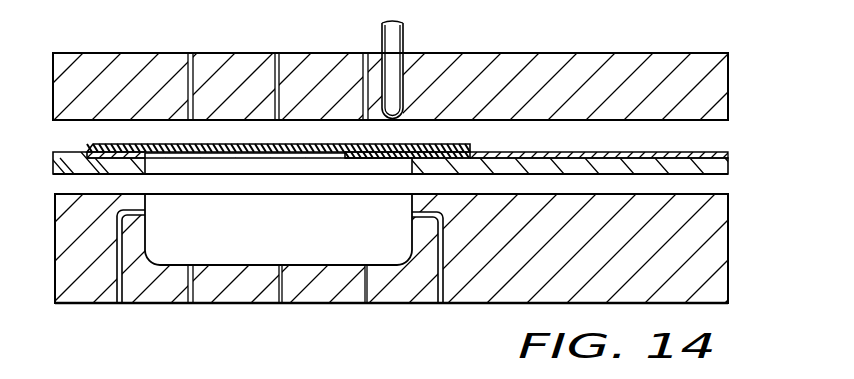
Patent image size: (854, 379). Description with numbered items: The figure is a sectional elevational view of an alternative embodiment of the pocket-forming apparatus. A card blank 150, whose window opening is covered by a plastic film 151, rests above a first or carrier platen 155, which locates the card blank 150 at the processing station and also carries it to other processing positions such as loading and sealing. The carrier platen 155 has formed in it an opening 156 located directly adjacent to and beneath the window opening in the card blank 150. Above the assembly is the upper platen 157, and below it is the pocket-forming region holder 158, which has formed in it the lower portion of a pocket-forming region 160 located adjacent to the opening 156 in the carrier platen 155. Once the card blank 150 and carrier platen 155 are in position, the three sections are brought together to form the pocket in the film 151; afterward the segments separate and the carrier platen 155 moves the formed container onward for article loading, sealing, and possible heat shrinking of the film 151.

The card blank 150 is at (703, 153).
The plastic film 151 is at (308, 147).
The carrier platen 155 is at (718, 165).
The opening 156 is at (242, 163).
The upper platen 157 is at (713, 90).
The pocket-forming region holder 158 is at (715, 240).
The pocket-forming region 160 is at (296, 251).